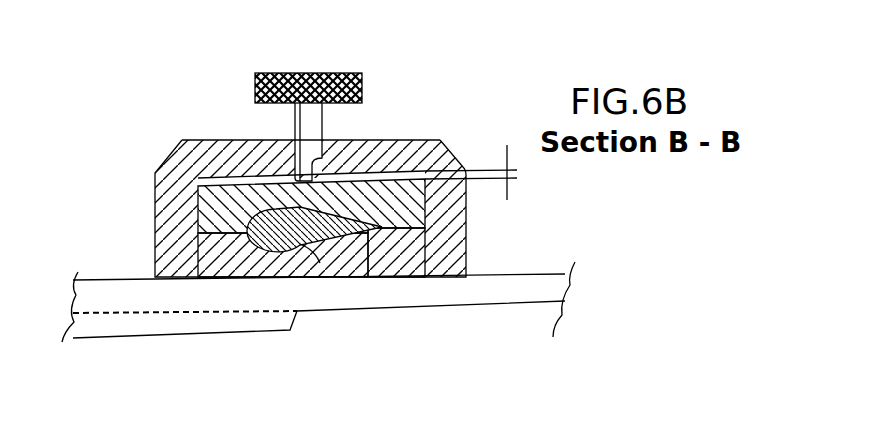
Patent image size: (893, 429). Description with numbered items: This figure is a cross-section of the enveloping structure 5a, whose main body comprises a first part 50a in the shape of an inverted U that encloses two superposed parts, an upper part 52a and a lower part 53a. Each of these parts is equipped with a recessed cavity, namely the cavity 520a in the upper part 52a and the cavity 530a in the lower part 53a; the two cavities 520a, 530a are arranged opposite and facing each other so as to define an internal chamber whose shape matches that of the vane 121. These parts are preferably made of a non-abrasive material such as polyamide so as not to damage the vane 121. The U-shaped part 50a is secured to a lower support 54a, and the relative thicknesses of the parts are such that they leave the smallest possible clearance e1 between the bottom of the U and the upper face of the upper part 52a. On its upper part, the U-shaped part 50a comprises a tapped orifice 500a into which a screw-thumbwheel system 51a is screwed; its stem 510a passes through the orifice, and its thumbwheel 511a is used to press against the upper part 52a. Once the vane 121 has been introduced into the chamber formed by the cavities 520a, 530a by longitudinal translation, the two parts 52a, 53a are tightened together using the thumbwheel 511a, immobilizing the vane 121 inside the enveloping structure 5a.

The enveloping structure 5a is at (172, 146).
The first part 50a is at (430, 138).
The tapped orifice 500a is at (252, 140).
The screw stem 510a is at (355, 140).
The thumbwheel 511a is at (290, 73).
The screw-thumbwheel system 51a is at (366, 84).
The recessed cavity 520a is at (343, 223).
The upper part 52a is at (410, 204).
The lower part 53a is at (405, 263).
The recessed cavity 530a is at (368, 228).
The lower support 54a is at (463, 292).
The vane 121 is at (318, 262).
The clearance e1 is at (481, 172).